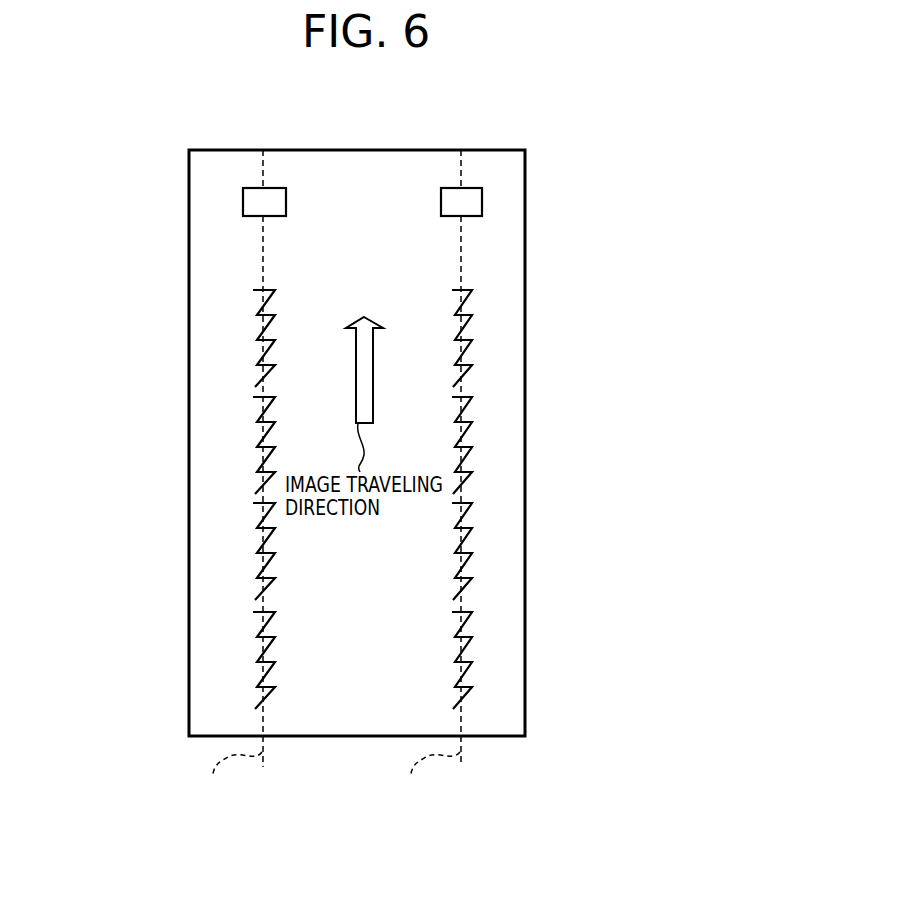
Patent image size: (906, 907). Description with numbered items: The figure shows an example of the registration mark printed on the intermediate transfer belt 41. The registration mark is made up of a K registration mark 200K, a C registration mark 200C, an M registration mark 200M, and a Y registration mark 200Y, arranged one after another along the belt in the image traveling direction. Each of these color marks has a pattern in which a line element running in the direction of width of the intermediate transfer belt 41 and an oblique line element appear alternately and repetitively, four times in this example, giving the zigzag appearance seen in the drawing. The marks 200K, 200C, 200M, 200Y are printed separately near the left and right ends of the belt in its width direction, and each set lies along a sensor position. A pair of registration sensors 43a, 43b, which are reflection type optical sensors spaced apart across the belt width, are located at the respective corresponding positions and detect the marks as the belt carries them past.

The intermediate transfer belt 41 is at (526, 177).
The registration sensor 43a is at (272, 188).
The registration sensor 43b is at (466, 188).
The K registration mark 200K is at (253, 290).
The C registration mark 200C is at (253, 397).
The M registration mark 200M is at (253, 503).
The Y registration mark 200Y is at (253, 612).